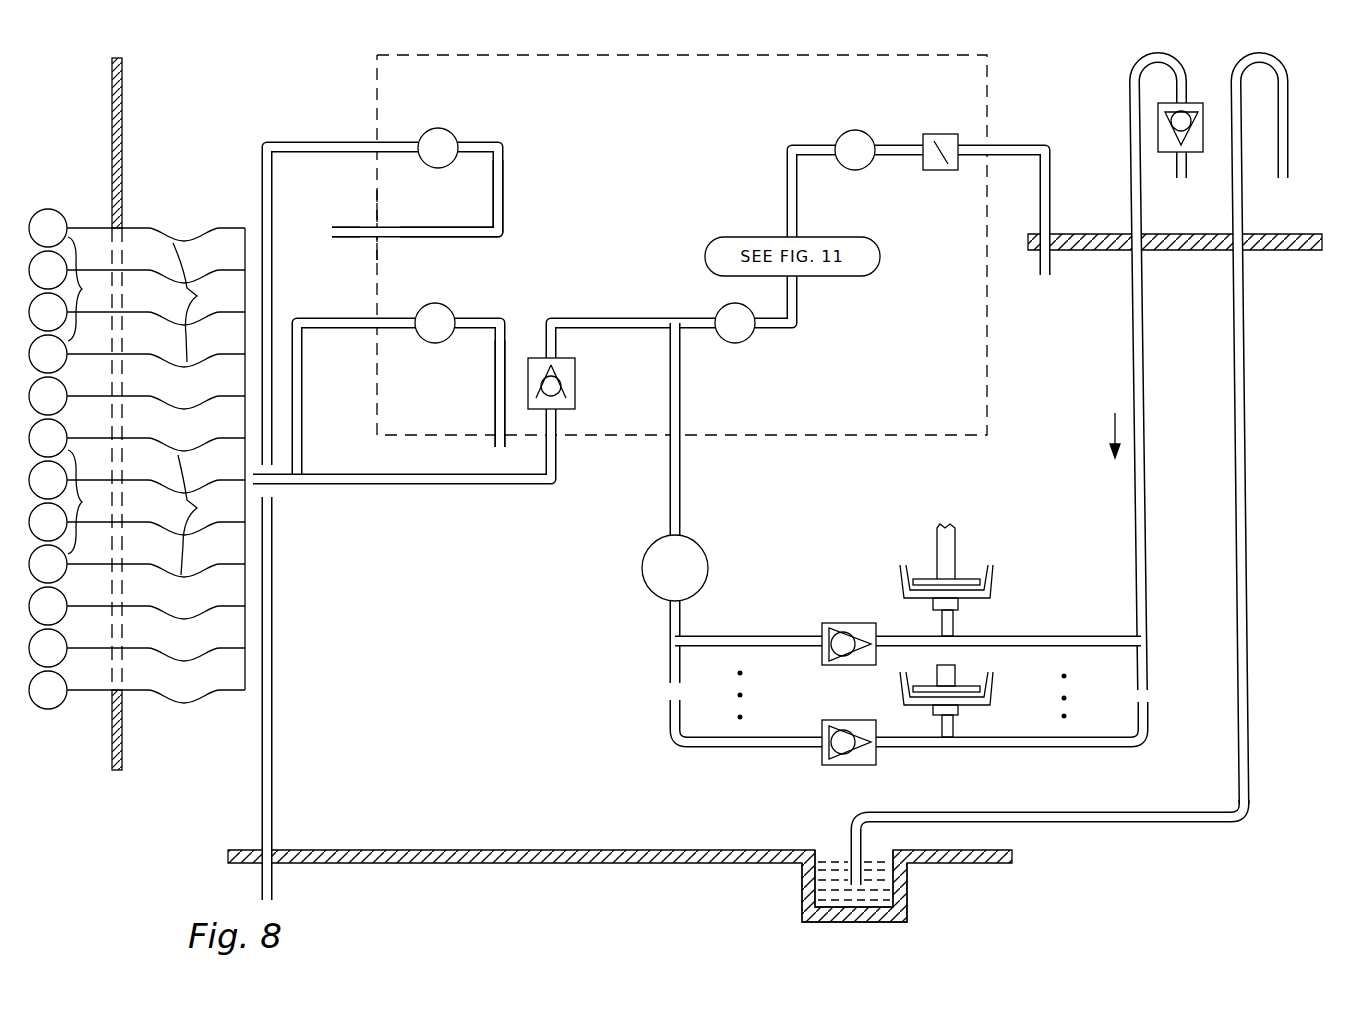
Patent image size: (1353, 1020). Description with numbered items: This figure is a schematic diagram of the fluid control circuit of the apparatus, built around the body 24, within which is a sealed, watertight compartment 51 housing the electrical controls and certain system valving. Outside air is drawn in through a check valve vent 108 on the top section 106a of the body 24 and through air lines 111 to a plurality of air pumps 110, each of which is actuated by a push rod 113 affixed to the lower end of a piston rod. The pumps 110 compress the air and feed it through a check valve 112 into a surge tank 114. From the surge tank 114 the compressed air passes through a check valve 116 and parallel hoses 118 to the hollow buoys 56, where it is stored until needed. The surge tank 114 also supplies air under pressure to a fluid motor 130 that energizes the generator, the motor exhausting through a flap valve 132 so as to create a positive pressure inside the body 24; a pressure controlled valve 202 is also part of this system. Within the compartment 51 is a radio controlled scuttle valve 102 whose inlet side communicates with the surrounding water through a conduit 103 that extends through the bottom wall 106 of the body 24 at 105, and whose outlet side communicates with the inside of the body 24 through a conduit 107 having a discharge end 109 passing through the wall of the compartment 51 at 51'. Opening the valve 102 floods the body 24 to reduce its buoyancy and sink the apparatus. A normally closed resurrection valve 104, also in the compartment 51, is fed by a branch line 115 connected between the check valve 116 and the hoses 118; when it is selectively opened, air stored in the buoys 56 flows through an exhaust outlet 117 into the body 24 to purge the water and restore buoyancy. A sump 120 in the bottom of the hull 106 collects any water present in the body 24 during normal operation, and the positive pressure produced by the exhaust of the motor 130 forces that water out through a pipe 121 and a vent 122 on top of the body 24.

The body 24 is at (112, 127).
The sealed compartment 51 is at (700, 245).
The wall passage of chamber 51' is at (352, 225).
The hollow buoys 56 is at (87, 395).
The scuttle solenoid valve 102 is at (447, 122).
The conduit 103 is at (305, 142).
The resurrection solenoid valve 104 is at (450, 289).
The passage through bottom wall 105 is at (274, 862).
The bottom wall 106 is at (760, 850).
The top section 106a is at (1178, 234).
The conduit 107 is at (440, 227).
The check valve vent 108 is at (1191, 103).
The discharge end 109 is at (332, 232).
The air pumps 110 is at (963, 577).
The air lines 111 is at (1008, 638).
The check valve 112 is at (852, 622).
The push rod 113 is at (935, 556).
The surge tank 114 is at (724, 553).
The branch line 115 is at (302, 410).
The check valve 116 is at (577, 394).
The exhaust outlet 117 is at (495, 400).
The parallel hoses 118 is at (204, 409).
The sump 120 is at (800, 888).
The pipe 121 is at (1050, 812).
The vent 122 is at (1288, 147).
The fluid motor 130 is at (858, 130).
The flap valve 132 is at (950, 171).
The pressure controlled valve 202 is at (736, 343).